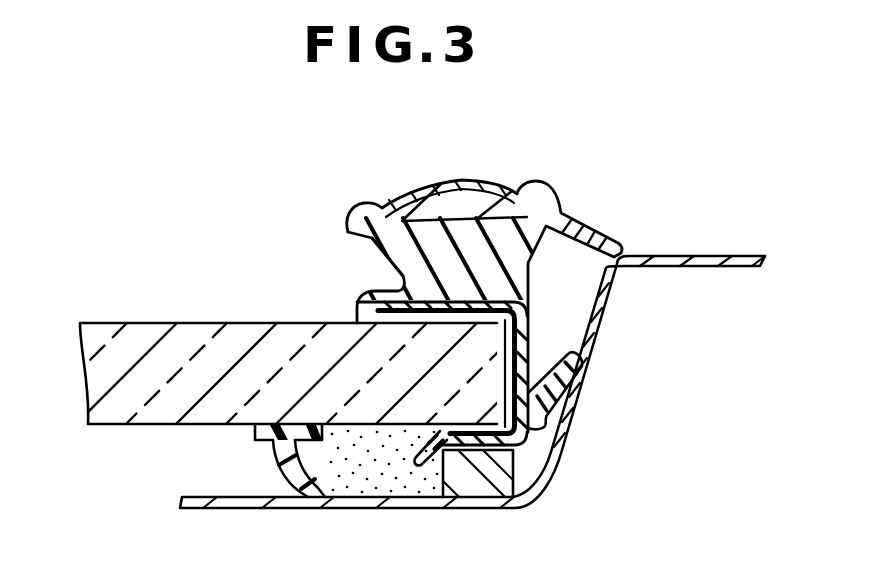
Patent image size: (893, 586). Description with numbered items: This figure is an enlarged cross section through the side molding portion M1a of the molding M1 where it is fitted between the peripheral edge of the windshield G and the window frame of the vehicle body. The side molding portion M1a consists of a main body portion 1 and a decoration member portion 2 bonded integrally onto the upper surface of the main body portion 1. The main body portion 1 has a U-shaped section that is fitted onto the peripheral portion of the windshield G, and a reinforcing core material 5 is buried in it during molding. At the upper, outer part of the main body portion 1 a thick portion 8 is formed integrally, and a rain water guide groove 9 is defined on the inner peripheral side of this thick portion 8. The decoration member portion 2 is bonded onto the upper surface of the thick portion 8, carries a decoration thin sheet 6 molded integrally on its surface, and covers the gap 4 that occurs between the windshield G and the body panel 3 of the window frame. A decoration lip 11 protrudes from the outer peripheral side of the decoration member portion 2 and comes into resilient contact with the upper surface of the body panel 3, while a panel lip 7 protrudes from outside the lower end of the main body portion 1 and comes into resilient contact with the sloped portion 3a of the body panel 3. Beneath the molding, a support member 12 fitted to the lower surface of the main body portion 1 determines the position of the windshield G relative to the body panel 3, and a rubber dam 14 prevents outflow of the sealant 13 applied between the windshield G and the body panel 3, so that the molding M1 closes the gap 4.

The main body portion 1 is at (522, 333).
The decoration member portion 2 is at (473, 198).
The body panel 3 is at (690, 260).
The sloped portion 3a is at (608, 297).
The gap 4 is at (580, 342).
The reinforcing core material 5 is at (524, 448).
The decoration thin sheet 6 is at (431, 180).
The panel lip 7 is at (570, 378).
The thick portion 8 is at (497, 254).
The rain water guide groove 9 is at (375, 270).
The decoration lip 11 is at (600, 238).
The support member 12 is at (482, 487).
The sealant 13 is at (367, 487).
The rubber dam 14 is at (290, 480).
The windshield G is at (172, 408).
The molding M1 is at (211, 189).
The side molding portion M1a is at (600, 193).